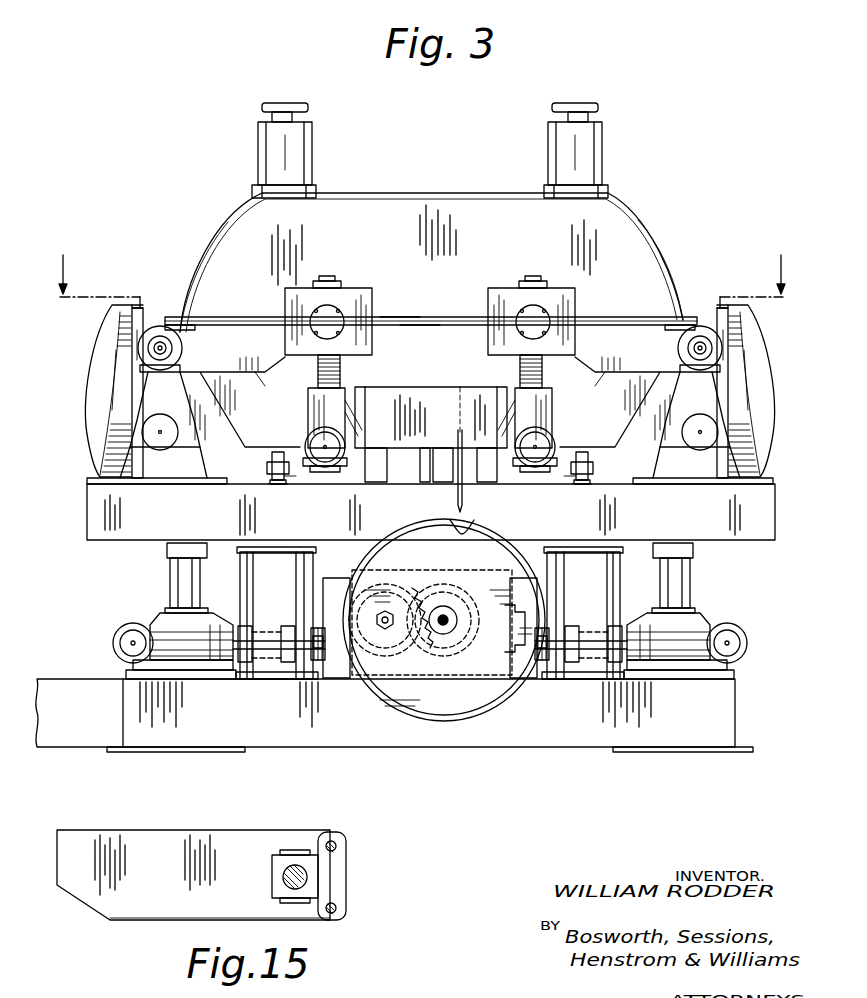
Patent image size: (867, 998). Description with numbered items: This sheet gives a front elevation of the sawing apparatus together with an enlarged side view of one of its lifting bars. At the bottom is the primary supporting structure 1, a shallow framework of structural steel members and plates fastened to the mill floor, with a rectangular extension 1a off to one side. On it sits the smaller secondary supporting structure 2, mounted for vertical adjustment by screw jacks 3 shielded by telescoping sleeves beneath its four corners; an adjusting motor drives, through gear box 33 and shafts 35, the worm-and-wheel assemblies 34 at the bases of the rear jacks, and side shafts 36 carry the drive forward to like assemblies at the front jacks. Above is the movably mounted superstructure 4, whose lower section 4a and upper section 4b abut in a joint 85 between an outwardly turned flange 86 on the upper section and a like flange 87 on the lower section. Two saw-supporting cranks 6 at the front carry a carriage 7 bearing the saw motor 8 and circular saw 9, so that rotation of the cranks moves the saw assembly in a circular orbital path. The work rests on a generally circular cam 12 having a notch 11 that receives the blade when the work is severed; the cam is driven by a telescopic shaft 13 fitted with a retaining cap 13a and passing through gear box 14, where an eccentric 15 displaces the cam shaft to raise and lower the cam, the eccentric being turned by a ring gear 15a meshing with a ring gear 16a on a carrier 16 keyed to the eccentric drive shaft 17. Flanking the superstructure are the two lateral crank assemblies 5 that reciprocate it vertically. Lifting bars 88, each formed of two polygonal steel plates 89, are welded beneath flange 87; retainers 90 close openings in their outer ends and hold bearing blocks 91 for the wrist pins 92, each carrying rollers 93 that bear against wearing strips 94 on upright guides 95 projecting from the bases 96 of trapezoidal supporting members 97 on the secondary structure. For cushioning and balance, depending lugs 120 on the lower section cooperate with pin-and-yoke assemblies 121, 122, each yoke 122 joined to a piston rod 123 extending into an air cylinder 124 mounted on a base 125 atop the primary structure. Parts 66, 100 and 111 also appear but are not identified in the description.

In FIG. 3, the primary supporting structure 1 is at (114, 709).
In FIG. 3, the rectangular extension 1a is at (60, 678).
In FIG. 3, the secondary supporting structure 2 is at (82, 520).
In FIG. 3, the jacks 3 is at (176, 578).
In FIG. 3, the superstructure 4 is at (446, 193).
In FIG. 3, the lower section 4a is at (218, 425).
In FIG. 3, the upper section 4b is at (217, 252).
In FIG. 3, the lateral crank assemblies 5 is at (188, 380).
In FIG. 3, the saw-supporting cranks 6 is at (305, 399).
In FIG. 3, the carriage 7 is at (486, 462).
In FIG. 3, the saw motor 8 is at (429, 473).
In FIG. 3, the circular saw 9 is at (476, 495).
In FIG. 3, the notch 11 is at (456, 517).
In FIG. 3, the cam 12 is at (507, 528).
In FIG. 3, the cam shaft 13 is at (455, 620).
In FIG. 3, the retaining cap 13a is at (450, 627).
In FIG. 3, the gear box 14 is at (440, 564).
In FIG. 3, the eccentric 15 is at (485, 592).
In FIG. 3, the ring gear 15a is at (440, 660).
In FIG. 3, the carrier 16 is at (387, 577).
In FIG. 3, the ring gear 16a is at (400, 660).
In FIG. 3, the eccentric drive shaft 17 is at (385, 628).
In FIG. 3, the gear box 33 is at (336, 586).
In FIG. 3, the worm-and-wheel assemblies 34 is at (146, 616).
In FIG. 3, the shafts 35 is at (272, 683).
In FIG. 3, the side shafts 36 is at (116, 630).
In FIG. 3, the bearing block 66 is at (328, 281).
In FIG. 3, the joint 85 is at (440, 318).
In FIG. 3, the outwardly turned flange 86 is at (398, 318).
In FIG. 3, the flange 87 is at (422, 327).
In FIG. 3, the lifting bars 88 is at (270, 376).
In FIG. 15, the lifting bars 88 is at (113, 829).
In FIG. 3, the polygonal steel plates 89 is at (256, 373).
In FIG. 15, the polygonal steel plates 89 is at (165, 905).
In FIG. 15, the retainers 90 is at (333, 872).
In FIG. 15, the bearing blocks 91 is at (276, 870).
In FIG. 3, the wrist pins 92 is at (176, 348).
In FIG. 15, the wrist pins 92 is at (296, 866).
In FIG. 3, the rollers 93 is at (172, 328).
In FIG. 3, the wearing strip 94 is at (134, 353).
In FIG. 3, the upright guide 95 is at (112, 340).
In FIG. 3, the bases 96 is at (87, 481).
In FIG. 3, the trapezoidal supporting members 97 is at (206, 474).
In FIG. 3, the pivot 100 is at (160, 414).
In FIG. 3, the rail 111 is at (142, 400).
In FIG. 3, the depending lugs 120 is at (312, 460).
In FIG. 3, the pin 121 is at (278, 458).
In FIG. 3, the yoke 122 is at (292, 479).
In FIG. 3, the piston rod 123 is at (272, 485).
In FIG. 3, the air cylinder 124 is at (260, 580).
In FIG. 3, the base 125 is at (250, 684).